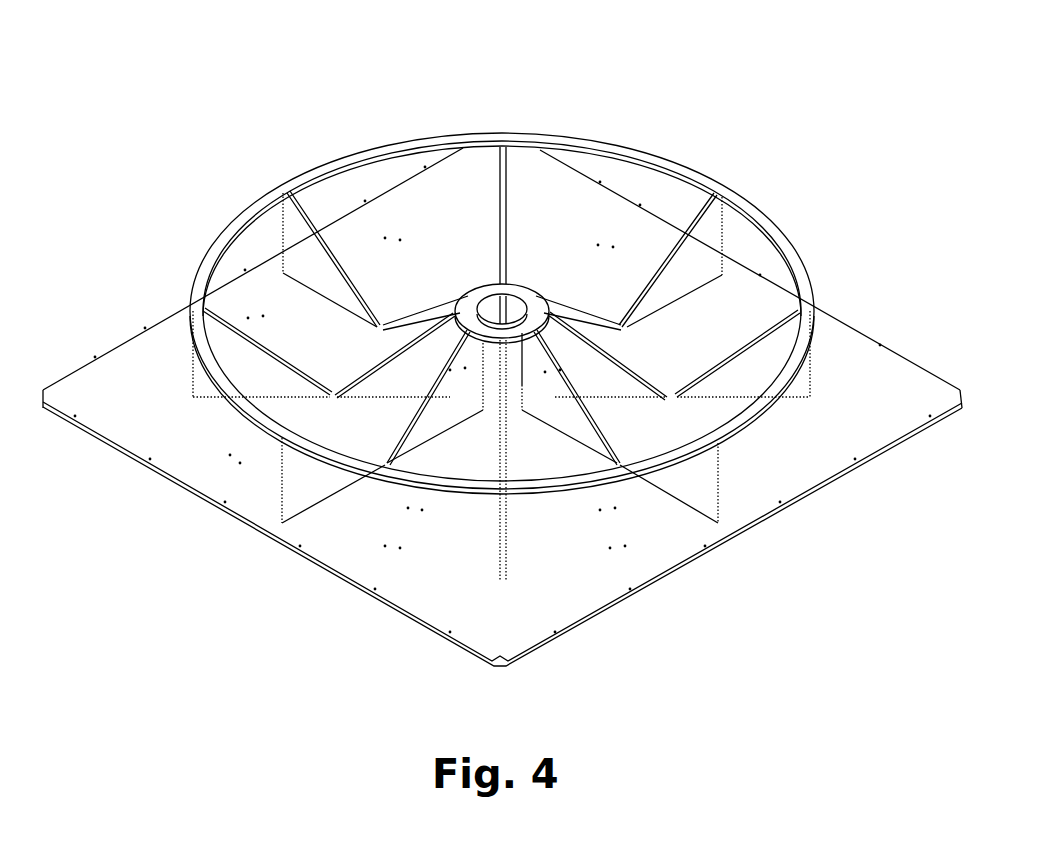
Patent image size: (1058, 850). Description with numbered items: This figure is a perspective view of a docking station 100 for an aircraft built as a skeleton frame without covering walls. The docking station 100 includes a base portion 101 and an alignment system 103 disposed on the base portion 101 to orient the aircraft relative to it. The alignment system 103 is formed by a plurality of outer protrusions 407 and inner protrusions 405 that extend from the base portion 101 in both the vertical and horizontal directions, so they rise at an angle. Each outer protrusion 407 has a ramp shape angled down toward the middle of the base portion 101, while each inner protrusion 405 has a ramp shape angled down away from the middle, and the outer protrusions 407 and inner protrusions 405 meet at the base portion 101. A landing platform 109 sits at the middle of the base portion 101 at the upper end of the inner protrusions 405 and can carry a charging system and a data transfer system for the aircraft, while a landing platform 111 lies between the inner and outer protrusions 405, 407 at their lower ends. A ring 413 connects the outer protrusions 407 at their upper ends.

The docking station 100 is at (270, 122).
The base portion 101 is at (400, 528).
The alignment system 103 is at (683, 257).
The landing platform 109 is at (478, 290).
The landing platform 111 is at (330, 395).
The inner protrusions 405 is at (570, 413).
The outer protrusions 407 is at (753, 367).
The ring 413 is at (608, 478).